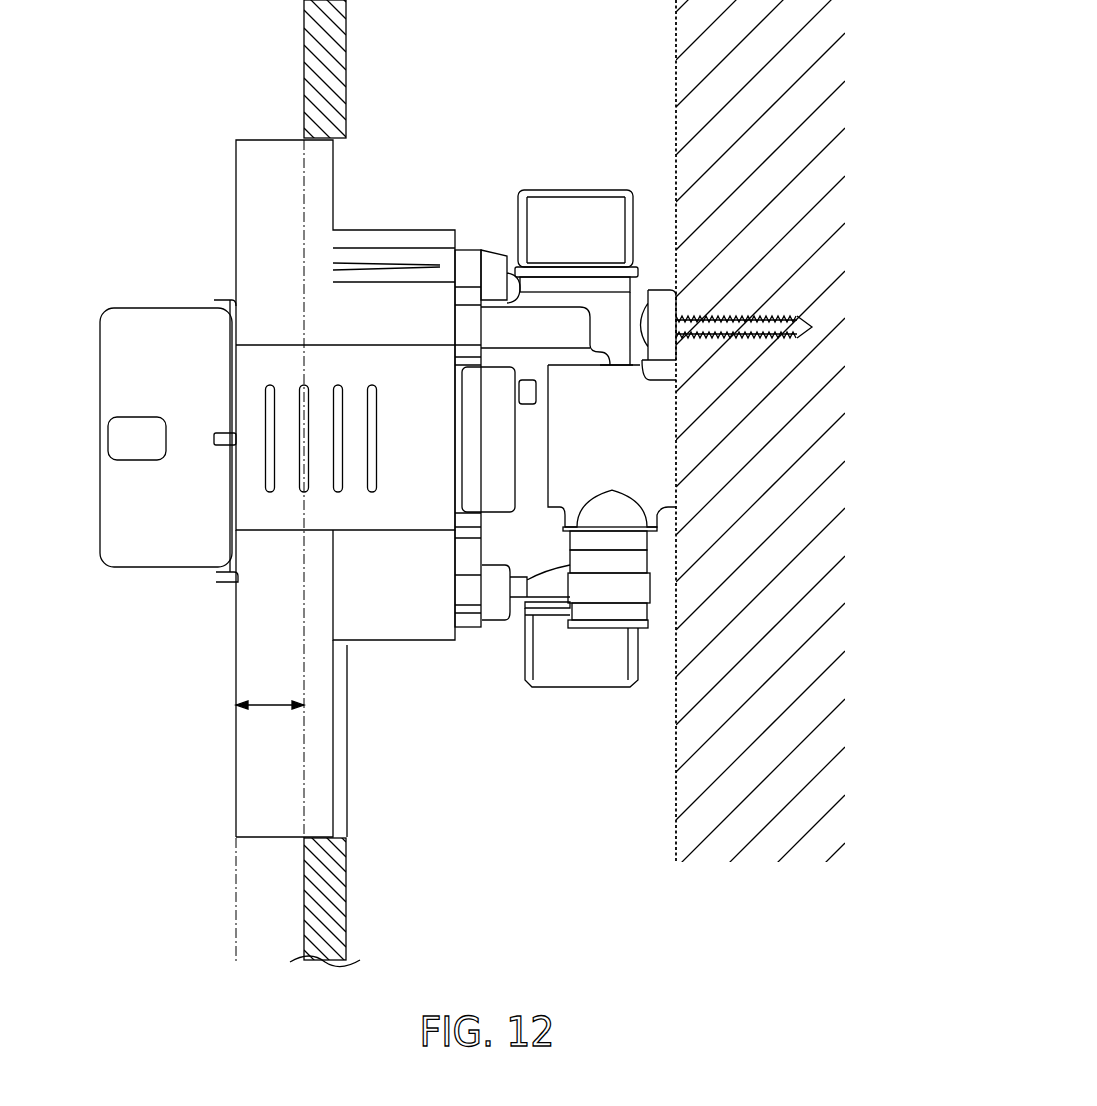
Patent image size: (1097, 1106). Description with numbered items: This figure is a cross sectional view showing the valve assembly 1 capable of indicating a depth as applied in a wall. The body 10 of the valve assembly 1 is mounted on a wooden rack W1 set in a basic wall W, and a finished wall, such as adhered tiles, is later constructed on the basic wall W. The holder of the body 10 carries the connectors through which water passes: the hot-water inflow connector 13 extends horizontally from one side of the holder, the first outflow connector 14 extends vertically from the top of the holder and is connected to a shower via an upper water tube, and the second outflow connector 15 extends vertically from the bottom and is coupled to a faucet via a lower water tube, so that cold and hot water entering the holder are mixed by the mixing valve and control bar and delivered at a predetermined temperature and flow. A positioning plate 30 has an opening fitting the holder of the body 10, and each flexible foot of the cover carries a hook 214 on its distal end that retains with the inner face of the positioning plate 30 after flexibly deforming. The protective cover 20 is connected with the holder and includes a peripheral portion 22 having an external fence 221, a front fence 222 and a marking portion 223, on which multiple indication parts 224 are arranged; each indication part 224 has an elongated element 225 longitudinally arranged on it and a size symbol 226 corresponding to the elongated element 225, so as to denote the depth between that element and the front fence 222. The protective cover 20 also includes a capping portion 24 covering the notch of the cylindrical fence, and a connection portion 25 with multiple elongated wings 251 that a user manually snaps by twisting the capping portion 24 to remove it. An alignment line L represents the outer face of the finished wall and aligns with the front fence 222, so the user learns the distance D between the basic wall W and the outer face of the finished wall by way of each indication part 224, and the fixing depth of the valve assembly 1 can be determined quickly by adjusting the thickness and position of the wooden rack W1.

The valve assembly 1 is at (118, 167).
The body 10 is at (573, 183).
The hot-water inflow connector 13 is at (607, 610).
The first outflow connector 14 is at (607, 207).
The second outflow connector 15 is at (567, 663).
The protective cover 20 is at (267, 137).
The peripheral portion 22 is at (233, 197).
The capping portion 24 is at (100, 368).
The connection portion 25 is at (80, 623).
The positioning plate 30 is at (470, 246).
The hook 214 is at (500, 267).
The external fence 221 is at (250, 657).
The front fence 222 is at (235, 767).
The marking portion 223 is at (423, 515).
The indication part 224 is at (63, 245).
The elongated element 225 is at (236, 388).
The size symbol 226 is at (277, 385).
The elongated wing 251 is at (217, 447).
The basic wall W is at (303, 37).
The wooden rack W1 is at (690, 785).
The distance D is at (270, 690).
The alignment line L is at (235, 913).